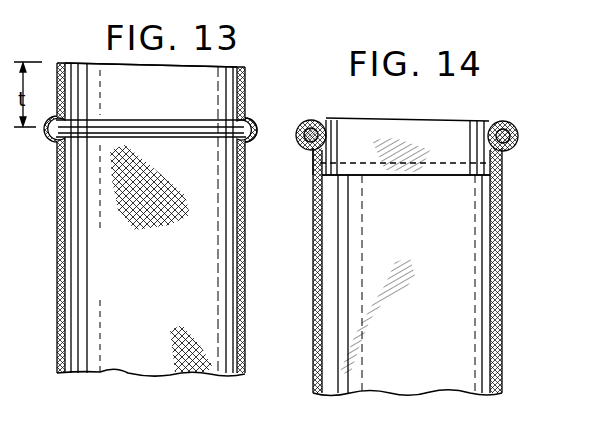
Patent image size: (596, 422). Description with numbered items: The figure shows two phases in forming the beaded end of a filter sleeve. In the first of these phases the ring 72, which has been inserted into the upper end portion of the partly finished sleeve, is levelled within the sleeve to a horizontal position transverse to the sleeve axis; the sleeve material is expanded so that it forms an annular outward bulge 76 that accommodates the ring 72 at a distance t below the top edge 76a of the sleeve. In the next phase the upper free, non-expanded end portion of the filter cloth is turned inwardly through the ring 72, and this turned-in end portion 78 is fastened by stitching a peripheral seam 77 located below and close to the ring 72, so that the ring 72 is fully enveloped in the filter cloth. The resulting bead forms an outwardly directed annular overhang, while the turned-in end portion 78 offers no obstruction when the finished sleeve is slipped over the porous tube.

In FIG. 13, the ring 72 is at (184, 140).
In FIG. 14, the ring 72 is at (518, 131).
In FIG. 13, the annular outward bulge 76 is at (252, 124).
In FIG. 13, the top edge 76a is at (227, 66).
In FIG. 14, the peripheral seam 77 is at (317, 166).
In FIG. 14, the turned-in end portion 78 is at (485, 175).